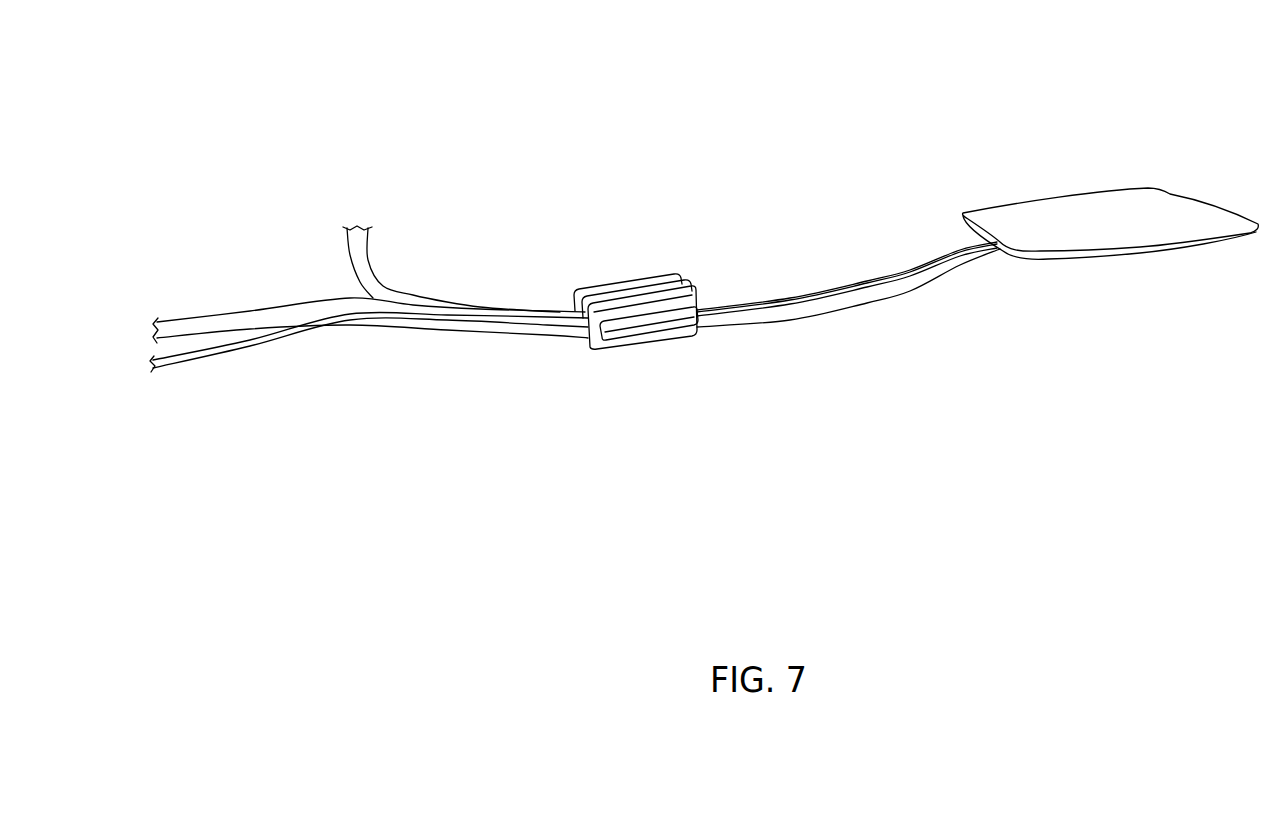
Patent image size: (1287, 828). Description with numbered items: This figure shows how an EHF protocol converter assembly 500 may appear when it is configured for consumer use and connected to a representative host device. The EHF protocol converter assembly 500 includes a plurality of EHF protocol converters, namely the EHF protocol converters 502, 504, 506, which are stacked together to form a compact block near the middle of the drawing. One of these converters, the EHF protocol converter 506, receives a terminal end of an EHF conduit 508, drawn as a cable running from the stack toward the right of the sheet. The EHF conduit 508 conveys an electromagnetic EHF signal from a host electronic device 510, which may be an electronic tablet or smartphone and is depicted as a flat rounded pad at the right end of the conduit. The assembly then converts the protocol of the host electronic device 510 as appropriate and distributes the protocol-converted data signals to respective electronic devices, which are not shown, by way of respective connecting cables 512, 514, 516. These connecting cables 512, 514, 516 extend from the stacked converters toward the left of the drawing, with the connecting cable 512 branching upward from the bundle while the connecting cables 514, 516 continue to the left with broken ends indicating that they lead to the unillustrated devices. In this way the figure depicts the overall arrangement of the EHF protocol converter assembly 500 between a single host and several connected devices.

The EHF protocol converter assembly 500 is at (727, 140).
The EHF protocol converter 502 is at (637, 283).
The EHF protocol converter 504 is at (690, 283).
The EHF protocol converter 506 is at (627, 350).
The EHF conduit 508 is at (867, 303).
The host electronic device 510 is at (1150, 253).
The connecting cable 512 is at (373, 273).
The connecting cable 514 is at (212, 320).
The connecting cable 516 is at (190, 358).